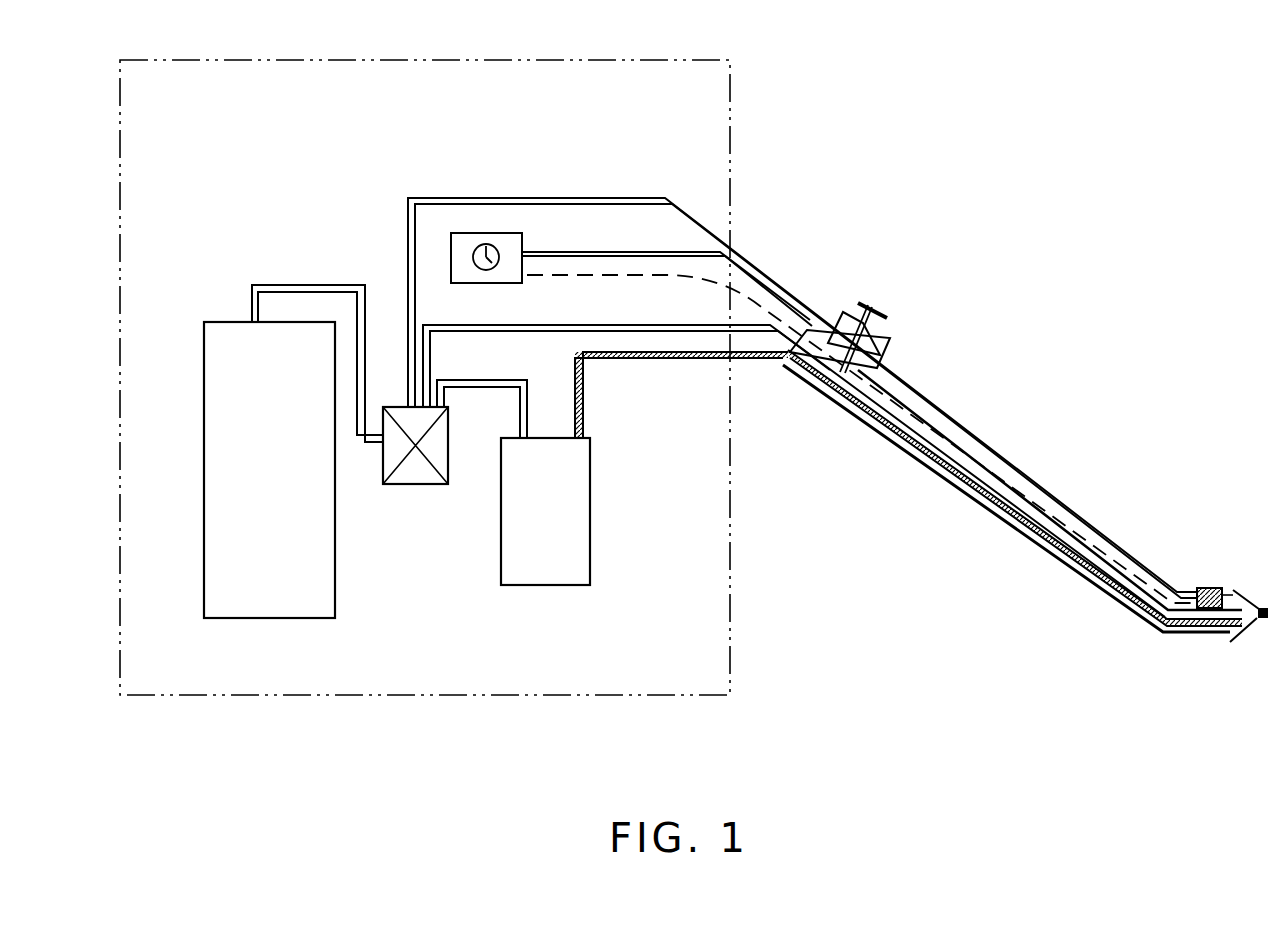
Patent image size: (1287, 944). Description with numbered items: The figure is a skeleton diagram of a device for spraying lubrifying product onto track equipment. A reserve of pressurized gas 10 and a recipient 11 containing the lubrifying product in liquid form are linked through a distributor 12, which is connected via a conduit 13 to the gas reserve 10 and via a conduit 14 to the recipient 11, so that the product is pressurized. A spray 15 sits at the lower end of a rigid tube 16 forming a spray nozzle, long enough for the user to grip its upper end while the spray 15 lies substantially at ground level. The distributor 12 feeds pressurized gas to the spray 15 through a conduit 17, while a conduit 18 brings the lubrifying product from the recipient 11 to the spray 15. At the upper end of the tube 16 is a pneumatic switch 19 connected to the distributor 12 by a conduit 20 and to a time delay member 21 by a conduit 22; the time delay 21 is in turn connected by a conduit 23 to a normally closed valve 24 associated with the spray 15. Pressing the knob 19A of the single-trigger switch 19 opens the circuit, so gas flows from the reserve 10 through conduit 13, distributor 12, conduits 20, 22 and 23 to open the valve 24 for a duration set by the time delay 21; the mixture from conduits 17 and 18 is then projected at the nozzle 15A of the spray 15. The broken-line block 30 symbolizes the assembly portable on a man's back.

The reserve of pressurized gas 10 is at (204, 575).
The recipient 11 is at (592, 545).
The distributor 12 is at (420, 485).
The conduit 13 is at (252, 300).
The conduit 14 is at (520, 420).
The spray 15 is at (1248, 594).
The nozzle 15A is at (1265, 618).
The rigid tube 16 is at (936, 482).
The conduit 17 is at (513, 331).
The conduit 18 is at (672, 360).
The pneumatic switch 19 is at (880, 355).
The knob 19A is at (872, 302).
The conduit 20 is at (690, 210).
The time delay member 21 is at (445, 247).
The conduit 22 is at (600, 252).
The conduit 23 is at (548, 273).
The valve 24 is at (1205, 588).
The portable assembly 30 is at (400, 697).